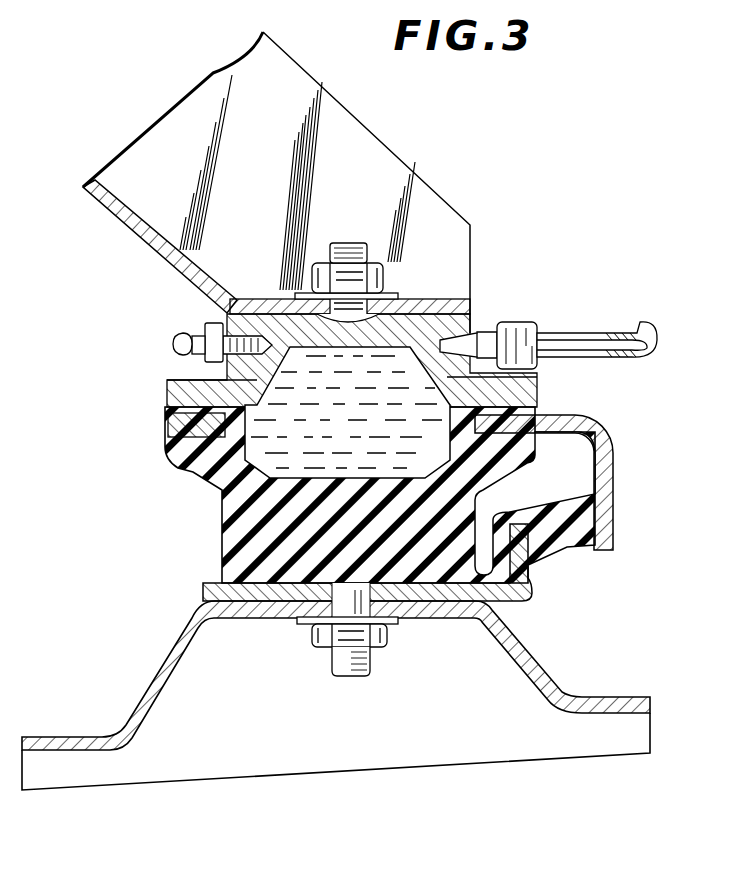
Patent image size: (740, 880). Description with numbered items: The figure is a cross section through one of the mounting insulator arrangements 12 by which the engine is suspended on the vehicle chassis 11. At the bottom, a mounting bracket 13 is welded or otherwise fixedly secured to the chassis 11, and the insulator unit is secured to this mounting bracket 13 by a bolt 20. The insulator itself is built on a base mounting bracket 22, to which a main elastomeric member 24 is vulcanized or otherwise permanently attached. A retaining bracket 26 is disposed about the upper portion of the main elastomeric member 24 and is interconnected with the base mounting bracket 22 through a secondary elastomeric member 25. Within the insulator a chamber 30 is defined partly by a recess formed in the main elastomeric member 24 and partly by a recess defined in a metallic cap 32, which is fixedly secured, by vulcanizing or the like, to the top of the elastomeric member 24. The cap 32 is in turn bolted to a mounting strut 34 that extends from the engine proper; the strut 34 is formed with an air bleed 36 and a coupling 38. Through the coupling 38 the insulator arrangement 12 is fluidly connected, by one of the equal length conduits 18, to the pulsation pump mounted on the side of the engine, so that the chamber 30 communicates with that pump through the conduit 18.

The chassis 11 is at (320, 773).
The insulator arrangement 12 is at (142, 488).
The mounting bracket 13 is at (253, 610).
The conduit 18 is at (640, 358).
The bolt 20 is at (343, 668).
The base mounting bracket 22 is at (518, 597).
The main elastomeric member 24 is at (238, 536).
The secondary elastomeric member 25 is at (585, 540).
The retaining bracket 26 is at (613, 497).
The chamber 30 is at (260, 383).
The metallic cap 32 is at (170, 398).
The mounting strut 34 is at (432, 197).
The air bleed 36 is at (182, 333).
The coupling 38 is at (513, 322).